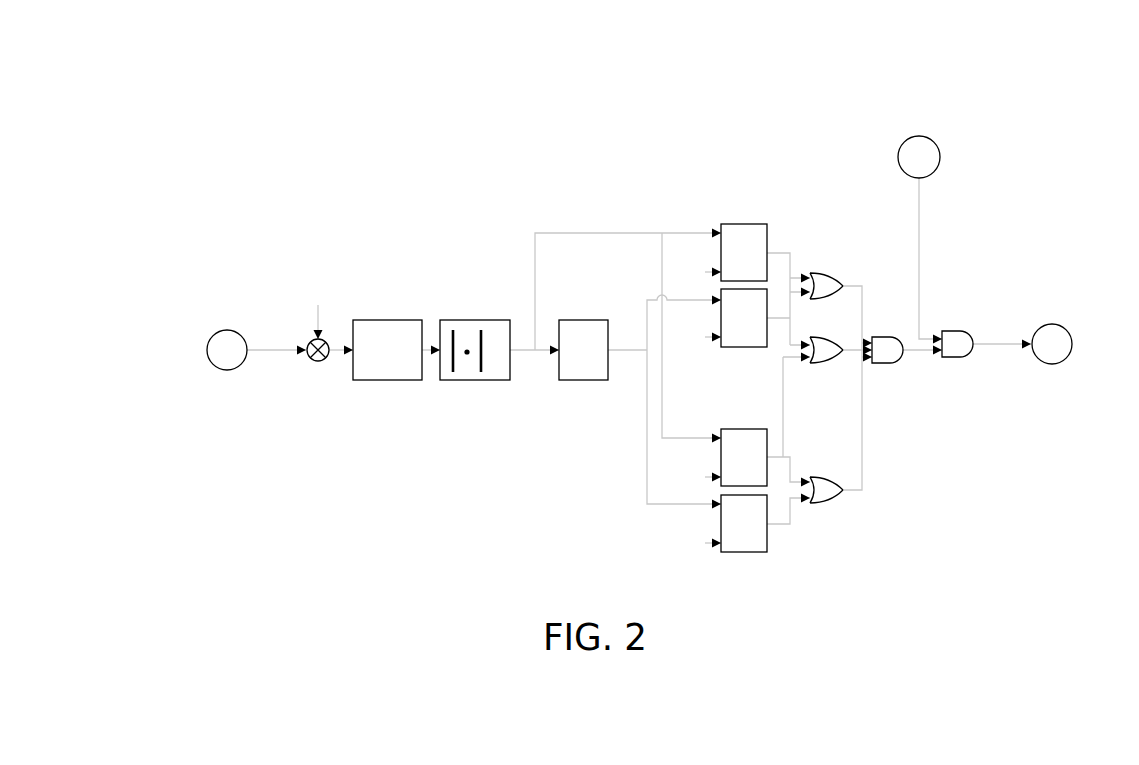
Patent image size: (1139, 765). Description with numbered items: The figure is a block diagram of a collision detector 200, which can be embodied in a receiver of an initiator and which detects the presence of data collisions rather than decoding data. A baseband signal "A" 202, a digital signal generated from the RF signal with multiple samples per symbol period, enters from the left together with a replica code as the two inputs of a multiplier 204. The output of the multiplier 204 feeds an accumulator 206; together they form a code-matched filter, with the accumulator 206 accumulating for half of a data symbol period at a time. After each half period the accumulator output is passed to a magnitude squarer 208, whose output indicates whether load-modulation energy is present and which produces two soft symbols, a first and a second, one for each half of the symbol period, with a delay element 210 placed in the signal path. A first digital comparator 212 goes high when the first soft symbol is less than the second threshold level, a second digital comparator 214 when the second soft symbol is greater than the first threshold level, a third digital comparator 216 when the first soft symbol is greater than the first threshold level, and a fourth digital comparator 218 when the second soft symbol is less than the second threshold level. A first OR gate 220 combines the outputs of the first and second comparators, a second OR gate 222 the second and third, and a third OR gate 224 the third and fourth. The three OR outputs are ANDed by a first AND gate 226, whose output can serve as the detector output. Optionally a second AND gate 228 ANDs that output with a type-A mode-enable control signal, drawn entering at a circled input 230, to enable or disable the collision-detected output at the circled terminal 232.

The collision detector 200 is at (640, 321).
The baseband signal "A" 202 is at (228, 371).
The multiplier 204 is at (318, 362).
The accumulator 206 is at (358, 380).
The magnitude squarer 208 is at (450, 380).
The delay element 210 is at (565, 380).
The first digital comparator 212 is at (765, 243).
The second digital comparator 214 is at (747, 347).
The third digital comparator 216 is at (752, 429).
The fourth digital comparator 218 is at (740, 552).
The first OR gate 220 is at (830, 276).
The second OR gate 222 is at (816, 364).
The third OR gate 224 is at (820, 500).
The first AND gate 226 is at (877, 363).
The second AND gate 228 is at (947, 358).
The TypeA_106_mode_enable input C 230 is at (941, 163).
The collision detected output F 232 is at (1049, 365).